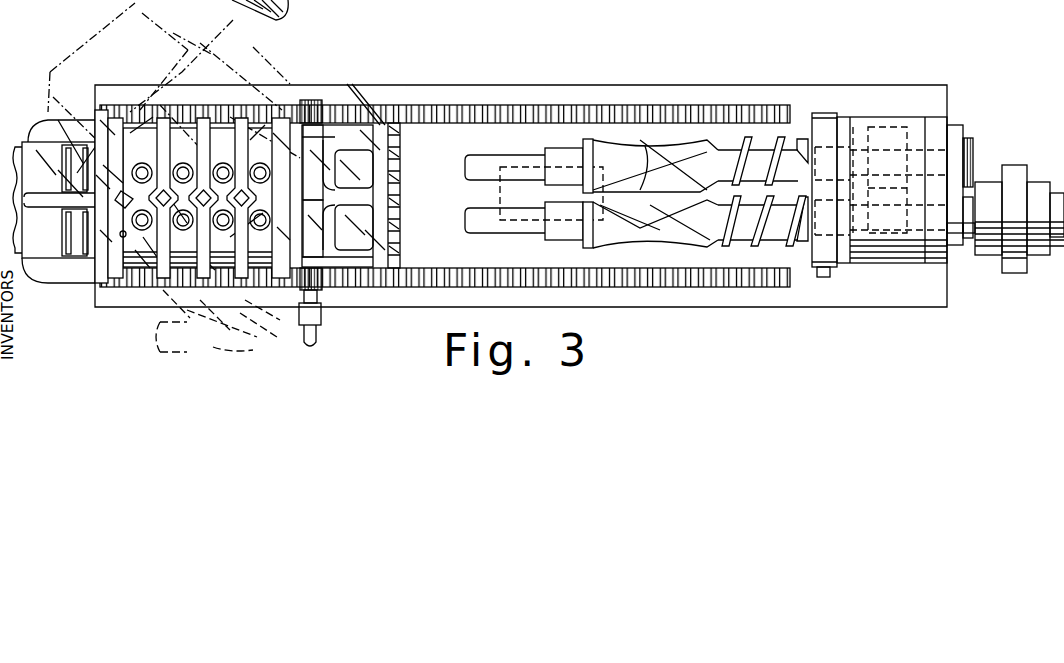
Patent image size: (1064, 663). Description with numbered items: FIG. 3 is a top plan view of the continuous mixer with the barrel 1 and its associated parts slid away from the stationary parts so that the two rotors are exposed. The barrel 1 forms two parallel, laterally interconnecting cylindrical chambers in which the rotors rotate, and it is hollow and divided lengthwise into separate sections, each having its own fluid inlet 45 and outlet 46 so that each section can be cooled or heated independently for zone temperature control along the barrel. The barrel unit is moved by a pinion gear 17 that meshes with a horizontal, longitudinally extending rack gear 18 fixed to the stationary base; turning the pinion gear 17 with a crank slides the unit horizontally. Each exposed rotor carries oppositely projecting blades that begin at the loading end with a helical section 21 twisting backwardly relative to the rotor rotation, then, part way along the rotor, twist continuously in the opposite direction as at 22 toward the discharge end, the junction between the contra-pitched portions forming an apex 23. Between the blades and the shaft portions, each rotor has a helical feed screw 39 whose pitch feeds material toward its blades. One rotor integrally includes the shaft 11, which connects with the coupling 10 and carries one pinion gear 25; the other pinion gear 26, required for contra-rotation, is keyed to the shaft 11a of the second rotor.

The barrel 1 is at (151, 157).
The pinion gear 17 is at (306, 108).
The rack gear 18 is at (440, 113).
The fluid inlet 45 is at (143, 164).
The fluid outlet 46 is at (202, 198).
The oppositely twisting blade portion 22 is at (620, 210).
The apex 23 is at (658, 212).
The helical section 21 is at (673, 207).
The helical feed screw 39 is at (743, 134).
The pinion gear 26 is at (892, 128).
The pinion gear 25 is at (883, 263).
The shaft 11a is at (970, 157).
The coupling 10 is at (1017, 167).
The shaft 11 is at (968, 230).